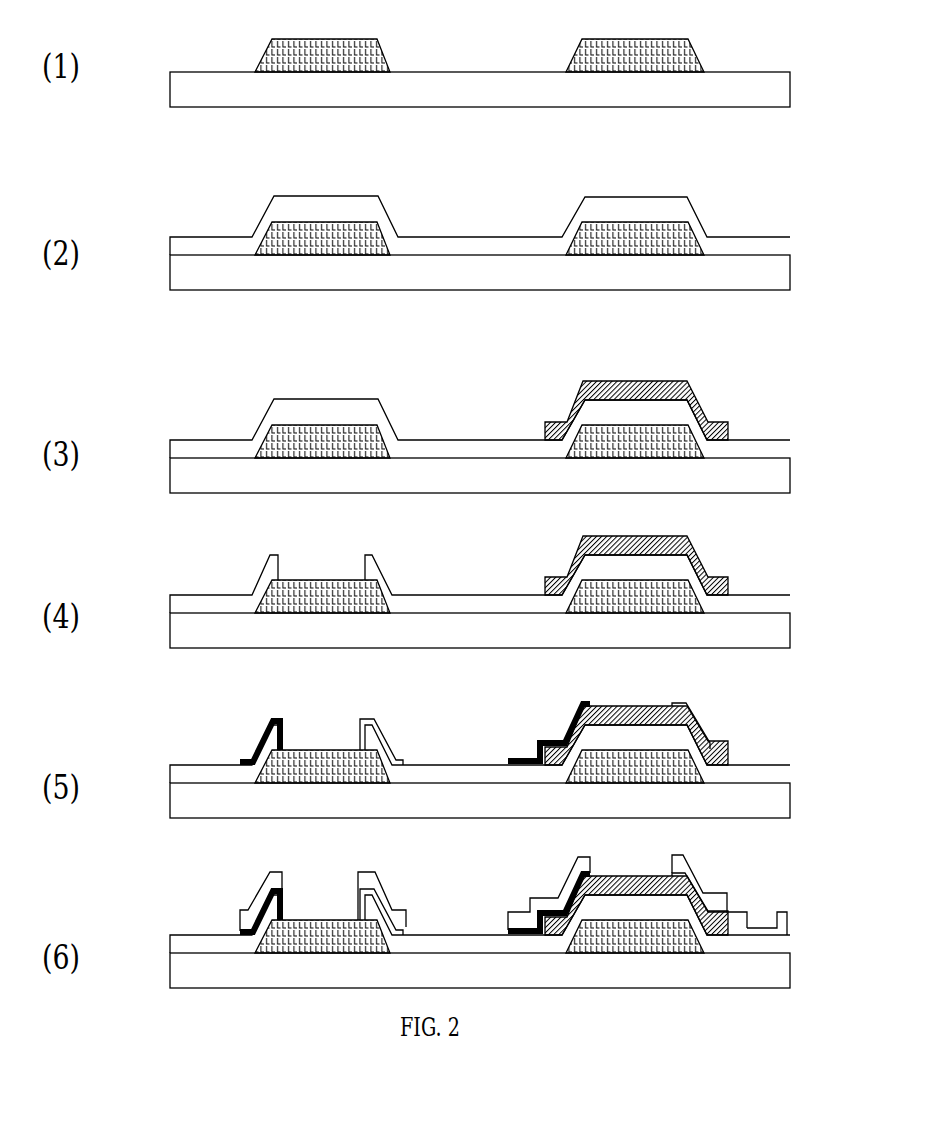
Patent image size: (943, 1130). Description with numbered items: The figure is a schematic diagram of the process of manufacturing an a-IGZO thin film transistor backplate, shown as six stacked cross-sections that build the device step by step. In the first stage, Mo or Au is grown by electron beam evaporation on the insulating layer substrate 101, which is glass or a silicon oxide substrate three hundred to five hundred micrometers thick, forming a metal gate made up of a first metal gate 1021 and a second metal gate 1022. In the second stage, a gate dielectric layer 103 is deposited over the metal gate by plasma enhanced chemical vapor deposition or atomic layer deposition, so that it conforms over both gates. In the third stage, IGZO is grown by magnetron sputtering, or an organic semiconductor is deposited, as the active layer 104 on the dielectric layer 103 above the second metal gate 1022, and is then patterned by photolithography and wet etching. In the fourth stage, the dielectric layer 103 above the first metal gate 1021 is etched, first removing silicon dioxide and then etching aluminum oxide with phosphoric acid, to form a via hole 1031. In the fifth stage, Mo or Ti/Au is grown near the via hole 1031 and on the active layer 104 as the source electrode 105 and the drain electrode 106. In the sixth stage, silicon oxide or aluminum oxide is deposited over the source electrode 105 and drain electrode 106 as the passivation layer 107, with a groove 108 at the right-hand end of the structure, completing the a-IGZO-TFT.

The insulating layer substrate 101 is at (193, 88).
The first metal gate 1021 is at (268, 58).
The second metal gate 1022 is at (633, 63).
The dielectric layer 103 is at (195, 248).
The via hole 1031 is at (317, 568).
The active layer 104 is at (717, 420).
The source electrode 105 is at (265, 728).
The drain electrode 106 is at (378, 740).
The passivation layer 107 is at (247, 917).
The groove 108 is at (762, 922).